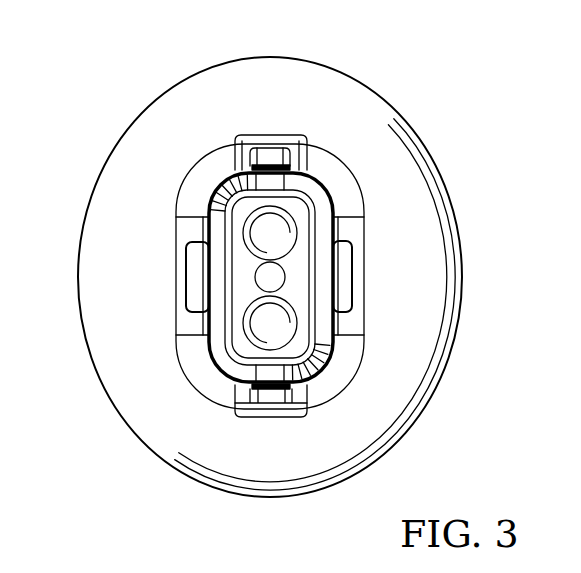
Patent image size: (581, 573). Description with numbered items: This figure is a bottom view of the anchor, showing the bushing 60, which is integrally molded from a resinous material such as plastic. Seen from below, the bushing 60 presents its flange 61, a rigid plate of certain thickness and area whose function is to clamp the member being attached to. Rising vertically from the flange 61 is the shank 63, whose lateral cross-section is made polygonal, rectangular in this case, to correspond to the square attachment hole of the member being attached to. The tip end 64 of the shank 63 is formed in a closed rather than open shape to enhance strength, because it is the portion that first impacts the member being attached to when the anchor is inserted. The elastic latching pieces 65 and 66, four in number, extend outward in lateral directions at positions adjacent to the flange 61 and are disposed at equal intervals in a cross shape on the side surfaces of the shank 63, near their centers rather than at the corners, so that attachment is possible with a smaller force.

The bushing 60 is at (437, 149).
The flange 61 is at (383, 380).
The shank 63 is at (209, 357).
The tip end 64 is at (237, 270).
The elastic latching piece 65 is at (183, 298).
The elastic latching piece 66 is at (275, 162).